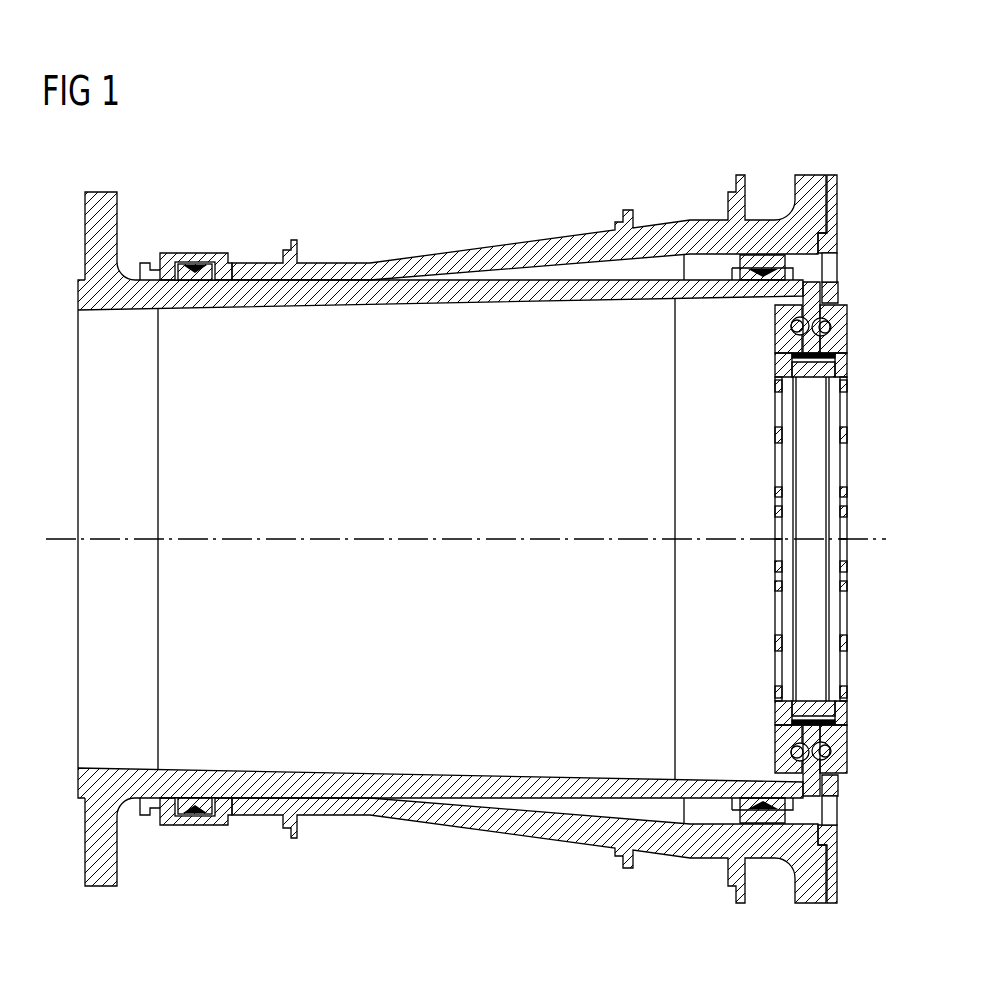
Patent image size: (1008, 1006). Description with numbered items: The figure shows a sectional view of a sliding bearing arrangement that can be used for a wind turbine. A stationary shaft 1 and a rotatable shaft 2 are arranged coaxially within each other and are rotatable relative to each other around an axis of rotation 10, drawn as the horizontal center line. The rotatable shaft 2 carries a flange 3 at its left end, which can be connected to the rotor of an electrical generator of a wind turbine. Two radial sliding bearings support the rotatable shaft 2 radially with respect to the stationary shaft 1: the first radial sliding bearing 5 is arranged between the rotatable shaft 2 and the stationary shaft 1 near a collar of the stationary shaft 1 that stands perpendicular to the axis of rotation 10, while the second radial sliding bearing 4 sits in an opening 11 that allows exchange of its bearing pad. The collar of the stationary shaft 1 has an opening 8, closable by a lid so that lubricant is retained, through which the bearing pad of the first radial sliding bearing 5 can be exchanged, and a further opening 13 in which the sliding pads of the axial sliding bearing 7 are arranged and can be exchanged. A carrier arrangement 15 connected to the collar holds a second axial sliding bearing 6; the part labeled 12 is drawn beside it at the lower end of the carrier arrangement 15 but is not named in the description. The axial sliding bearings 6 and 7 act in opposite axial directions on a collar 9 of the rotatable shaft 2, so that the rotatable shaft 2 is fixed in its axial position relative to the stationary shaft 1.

The stationary shaft 1 is at (812, 198).
The rotatable shaft 2 is at (123, 297).
The flange 3 is at (100, 236).
The second radial sliding bearing 4 is at (185, 258).
The first radial sliding bearing 5 is at (760, 262).
The second axial sliding bearing 6 is at (780, 346).
The axial sliding bearing 7 is at (847, 338).
The opening 8 is at (832, 268).
The collar 9 is at (812, 332).
The axis of rotation 10 is at (881, 536).
The opening 11 is at (207, 272).
The retaining ring 12 is at (792, 350).
The opening 13 is at (830, 316).
The carrier arrangement 15 is at (817, 378).